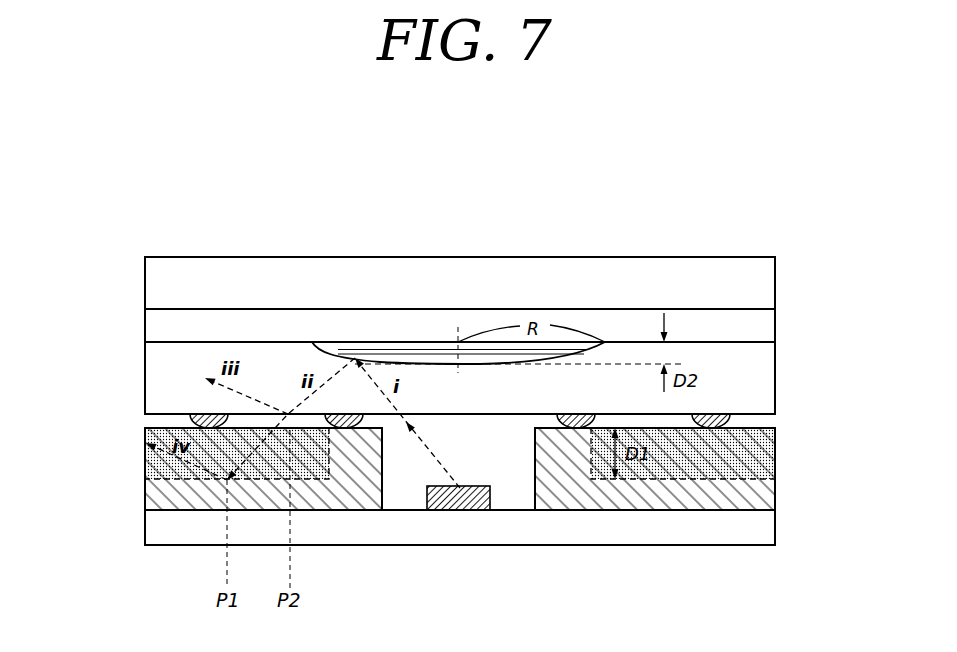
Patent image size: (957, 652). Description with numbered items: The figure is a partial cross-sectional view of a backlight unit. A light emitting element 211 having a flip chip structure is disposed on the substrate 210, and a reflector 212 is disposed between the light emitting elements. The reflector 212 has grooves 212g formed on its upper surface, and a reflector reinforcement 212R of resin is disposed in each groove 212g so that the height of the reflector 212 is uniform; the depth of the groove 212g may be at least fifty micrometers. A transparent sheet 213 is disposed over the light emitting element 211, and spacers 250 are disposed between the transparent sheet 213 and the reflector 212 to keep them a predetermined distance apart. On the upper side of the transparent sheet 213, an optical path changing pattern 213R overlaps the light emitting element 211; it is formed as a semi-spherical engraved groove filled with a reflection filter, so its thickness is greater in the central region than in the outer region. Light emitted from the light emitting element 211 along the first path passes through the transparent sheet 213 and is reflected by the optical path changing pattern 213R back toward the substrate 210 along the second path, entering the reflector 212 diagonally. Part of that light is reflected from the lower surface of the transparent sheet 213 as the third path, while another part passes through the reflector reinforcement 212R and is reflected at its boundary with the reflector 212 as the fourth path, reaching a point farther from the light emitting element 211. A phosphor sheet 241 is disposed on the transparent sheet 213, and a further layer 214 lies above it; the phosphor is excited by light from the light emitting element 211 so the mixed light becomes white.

The substrate 210 is at (763, 535).
The light emitting element 211 is at (458, 492).
The reflector 212 is at (763, 497).
The reflector reinforcement 212R is at (763, 450).
The groove 212g is at (283, 471).
The transparent sheet 213 is at (763, 388).
The optical path changing pattern 213R is at (414, 350).
The cover layer 214 is at (763, 288).
The phosphor sheet 241 is at (763, 326).
The spacer 250 is at (572, 416).